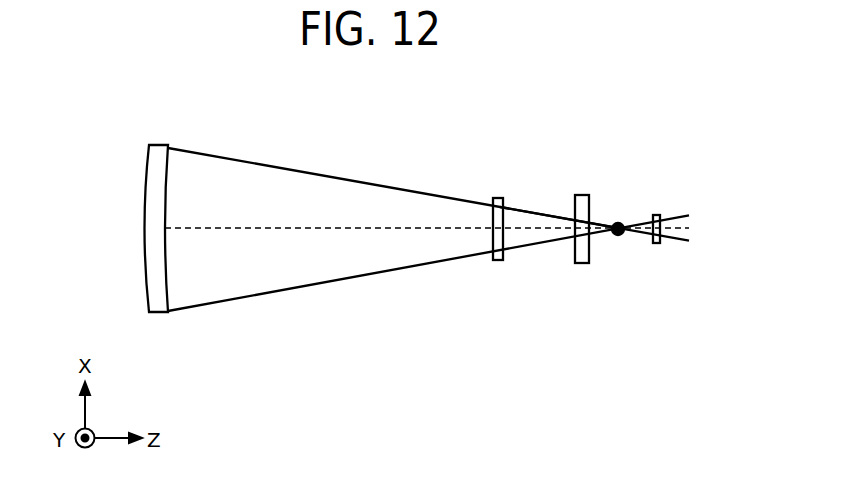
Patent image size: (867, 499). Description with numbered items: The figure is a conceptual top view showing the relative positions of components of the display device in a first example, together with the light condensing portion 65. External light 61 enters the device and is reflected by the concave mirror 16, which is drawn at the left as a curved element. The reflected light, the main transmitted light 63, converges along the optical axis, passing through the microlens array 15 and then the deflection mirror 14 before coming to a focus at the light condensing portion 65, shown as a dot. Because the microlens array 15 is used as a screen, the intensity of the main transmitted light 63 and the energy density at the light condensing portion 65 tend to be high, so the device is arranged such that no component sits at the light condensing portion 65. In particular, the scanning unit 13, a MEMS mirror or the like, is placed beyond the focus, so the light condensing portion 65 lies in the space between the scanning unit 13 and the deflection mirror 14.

The concave mirror 16 is at (155, 145).
The external light 61 is at (258, 163).
The main transmitted light 63 is at (537, 208).
The microlens array 15 is at (496, 197).
The deflection mirror 14 is at (582, 194).
The light condensing portion 65 is at (617, 222).
The scanning unit 13 is at (658, 214).